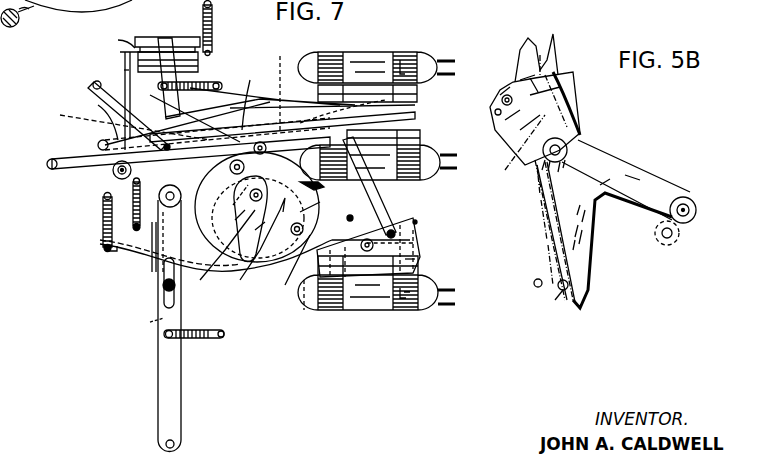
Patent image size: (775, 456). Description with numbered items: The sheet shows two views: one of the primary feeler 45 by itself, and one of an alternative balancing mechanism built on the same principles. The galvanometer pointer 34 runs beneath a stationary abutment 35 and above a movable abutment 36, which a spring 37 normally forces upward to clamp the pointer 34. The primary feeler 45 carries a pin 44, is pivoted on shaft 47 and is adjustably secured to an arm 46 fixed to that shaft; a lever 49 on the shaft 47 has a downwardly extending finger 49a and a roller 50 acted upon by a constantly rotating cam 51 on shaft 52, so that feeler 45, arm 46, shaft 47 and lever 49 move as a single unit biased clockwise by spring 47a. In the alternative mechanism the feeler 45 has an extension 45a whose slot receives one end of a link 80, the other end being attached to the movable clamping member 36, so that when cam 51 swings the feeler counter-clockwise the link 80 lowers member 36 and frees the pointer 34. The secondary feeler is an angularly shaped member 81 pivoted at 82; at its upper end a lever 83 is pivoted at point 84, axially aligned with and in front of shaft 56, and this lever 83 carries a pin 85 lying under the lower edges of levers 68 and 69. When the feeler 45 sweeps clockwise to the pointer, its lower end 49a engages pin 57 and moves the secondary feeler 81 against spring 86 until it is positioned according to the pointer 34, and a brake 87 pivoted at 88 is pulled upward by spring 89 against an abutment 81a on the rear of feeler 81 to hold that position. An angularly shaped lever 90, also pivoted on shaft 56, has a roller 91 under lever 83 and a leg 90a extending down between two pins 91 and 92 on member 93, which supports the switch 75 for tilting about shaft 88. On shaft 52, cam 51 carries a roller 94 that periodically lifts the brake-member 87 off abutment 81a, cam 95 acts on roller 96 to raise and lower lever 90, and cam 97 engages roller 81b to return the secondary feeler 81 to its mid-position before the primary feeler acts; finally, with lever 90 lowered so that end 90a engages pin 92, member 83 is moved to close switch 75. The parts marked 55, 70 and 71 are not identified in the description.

In FIG. 7, the knob 55 is at (38, 13).
In FIG. 7, the stationary abutment 35 is at (144, 37).
In FIG. 7, the pointer 34 is at (180, 38).
In FIG. 7, the spring 37 is at (213, 5).
In FIG. 7, the primary feeler 45 is at (113, 34).
In FIG. 5B, the primary feeler 45 is at (523, 50).
In FIG. 7, the movable abutment 36 is at (122, 53).
In FIG. 7, the link 80 is at (124, 71).
In FIG. 7, the spring 47a is at (212, 83).
In FIG. 7, the roller 96 is at (244, 95).
In FIG. 7, the roller 50 is at (282, 84).
In FIG. 5B, the roller 50 is at (687, 198).
In FIG. 7, the lever 68 is at (92, 85).
In FIG. 7, the extension 45a is at (181, 127).
In FIG. 7, the pin 85 is at (95, 119).
In FIG. 7, the lever 69 is at (98, 142).
In FIG. 7, the lever 83 is at (46, 155).
In FIG. 7, the pivot point 84 is at (416, 120).
In FIG. 7, the shaft 56 is at (408, 105).
In FIG. 7, the solenoid 71 is at (374, 60).
In FIG. 7, the solenoid 70 is at (451, 156).
In FIG. 7, the cam 51 is at (323, 187).
In FIG. 7, the switch 75 is at (376, 312).
In FIG. 7, the roller 94 is at (307, 311).
In FIG. 7, the abutment 81a is at (255, 218).
In FIG. 7, the cam 97 is at (240, 265).
In FIG. 7, the shaft 52 is at (251, 272).
In FIG. 7, the cam 95 is at (288, 270).
In FIG. 7, the secondary feeler 81 is at (162, 355).
In FIG. 7, the pivot 82 is at (176, 446).
In FIG. 7, the pin 57 is at (162, 287).
In FIG. 5B, the pin 57 is at (551, 305).
In FIG. 7, the roller 81b is at (150, 250).
In FIG. 7, the finger 49a is at (139, 325).
In FIG. 5B, the finger 49a is at (588, 258).
In FIG. 7, the spring 86 is at (211, 342).
In FIG. 7, the roller 91 is at (114, 173).
In FIG. 7, the angularly shaped lever 90 is at (124, 190).
In FIG. 7, the spring 89 is at (102, 232).
In FIG. 7, the brake 87 is at (108, 252).
In FIG. 7, the pivot 88 is at (413, 243).
In FIG. 7, the leg 90a is at (385, 206).
In FIG. 7, the pin 92 is at (417, 224).
In FIG. 7, the member 93 is at (418, 258).
In FIG. 5B, the pin 44 is at (512, 100).
In FIG. 5B, the shaft 47 is at (568, 148).
In FIG. 5B, the arm 46 is at (534, 208).
In FIG. 5B, the lever 49 is at (642, 177).